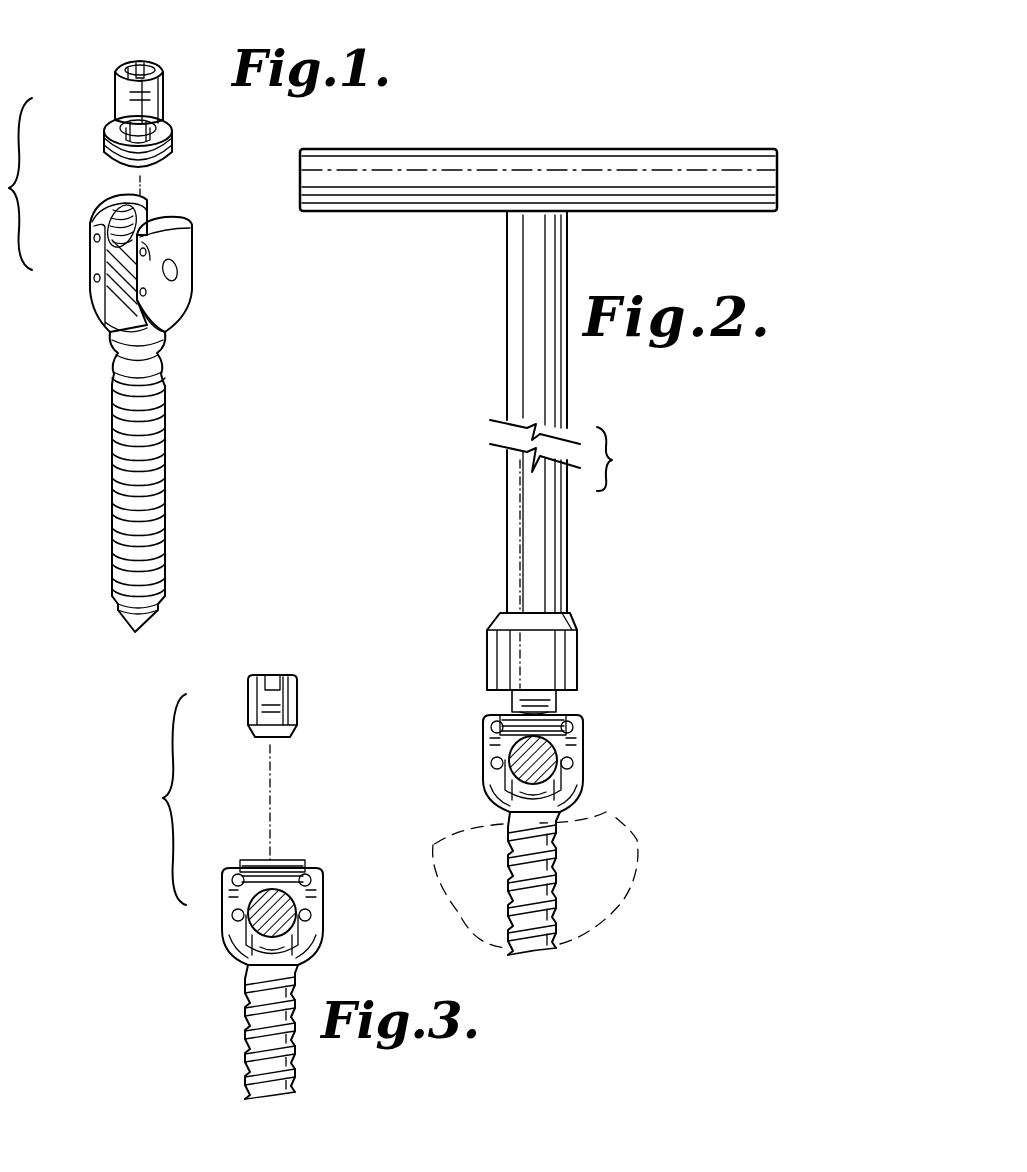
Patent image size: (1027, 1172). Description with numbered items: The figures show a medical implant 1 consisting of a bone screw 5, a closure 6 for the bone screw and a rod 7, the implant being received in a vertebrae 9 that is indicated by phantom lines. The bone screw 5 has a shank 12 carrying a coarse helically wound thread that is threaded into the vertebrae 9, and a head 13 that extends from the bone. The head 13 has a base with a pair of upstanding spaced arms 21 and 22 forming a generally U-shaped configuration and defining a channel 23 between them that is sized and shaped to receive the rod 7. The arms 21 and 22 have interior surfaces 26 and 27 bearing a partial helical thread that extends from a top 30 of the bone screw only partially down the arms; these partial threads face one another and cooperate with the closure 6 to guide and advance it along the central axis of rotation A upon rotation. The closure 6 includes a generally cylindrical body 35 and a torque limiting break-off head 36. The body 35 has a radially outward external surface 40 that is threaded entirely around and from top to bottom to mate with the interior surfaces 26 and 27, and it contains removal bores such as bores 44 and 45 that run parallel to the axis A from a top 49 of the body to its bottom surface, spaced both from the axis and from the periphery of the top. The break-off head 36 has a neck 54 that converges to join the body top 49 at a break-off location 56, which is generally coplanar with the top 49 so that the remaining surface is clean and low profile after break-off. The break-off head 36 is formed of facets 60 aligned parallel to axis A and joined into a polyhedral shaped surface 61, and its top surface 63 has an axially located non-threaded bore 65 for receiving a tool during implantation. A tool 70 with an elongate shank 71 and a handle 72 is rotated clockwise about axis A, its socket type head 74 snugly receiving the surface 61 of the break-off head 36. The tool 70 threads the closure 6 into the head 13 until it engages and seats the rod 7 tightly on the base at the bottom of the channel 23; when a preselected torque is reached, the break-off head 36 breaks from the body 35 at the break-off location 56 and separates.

In FIG. 1, the medical implant 1 is at (66, 400).
In FIG. 2, the medical implant 1 is at (614, 770).
In FIG. 1, the bone screw 5 is at (171, 505).
In FIG. 2, the bone screw 5 is at (532, 883).
In FIG. 3, the bone screw 5 is at (281, 1008).
In FIG. 1, the closure 6 is at (172, 140).
In FIG. 2, the closure 6 is at (508, 717).
In FIG. 2, the rod 7 is at (485, 784).
In FIG. 3, the rod 7 is at (250, 922).
In FIG. 2, the vertebrae 9 is at (638, 822).
In FIG. 1, the shank 12 is at (165, 508).
In FIG. 2, the shank 12 is at (510, 902).
In FIG. 3, the shank 12 is at (246, 1031).
In FIG. 1, the head 13 is at (154, 284).
In FIG. 2, the head 13 is at (530, 763).
In FIG. 3, the head 13 is at (281, 902).
In FIG. 1, the arm 21 is at (94, 263).
In FIG. 2, the arm 21 is at (494, 763).
In FIG. 3, the arm 21 is at (224, 880).
In FIG. 1, the arm 22 is at (194, 292).
In FIG. 2, the arm 22 is at (530, 763).
In FIG. 3, the arm 22 is at (281, 902).
In FIG. 2, the channel 23 is at (524, 786).
In FIG. 1, the interior surface 26 is at (171, 217).
In FIG. 1, the interior surface 27 is at (168, 226).
In FIG. 1, the top 30 is at (96, 238).
In FIG. 1, the closure body 35 is at (129, 141).
In FIG. 2, the closure body 35 is at (492, 717).
In FIG. 3, the closure body 35 is at (302, 862).
In FIG. 1, the break-off head 36 is at (150, 62).
In FIG. 2, the break-off head 36 is at (527, 691).
In FIG. 3, the break-off head 36 is at (300, 699).
In FIG. 1, the external surface 40 is at (145, 125).
In FIG. 3, the external surface 40 is at (281, 846).
In FIG. 1, the bore 44 is at (135, 125).
In FIG. 1, the bore 45 is at (135, 120).
In FIG. 1, the top 49 is at (164, 108).
In FIG. 1, the neck 54 is at (129, 120).
In FIG. 2, the neck 54 is at (527, 673).
In FIG. 3, the neck 54 is at (298, 730).
In FIG. 1, the break-off location 56 is at (129, 136).
In FIG. 2, the break-off location 56 is at (512, 705).
In FIG. 1, the facets 60 is at (168, 62).
In FIG. 1, the polyhedral shaped surface 61 is at (184, 67).
In FIG. 1, the top surface 63 is at (168, 67).
In FIG. 1, the non-threaded bore 65 is at (184, 67).
In FIG. 2, the tool 70 is at (556, 412).
In FIG. 2, the shank 71 is at (568, 556).
In FIG. 2, the handle 72 is at (588, 150).
In FIG. 2, the socket type head 74 is at (578, 640).
In FIG. 1, the axis of rotation A is at (144, 190).
In FIG. 3, the axis of rotation A is at (274, 790).